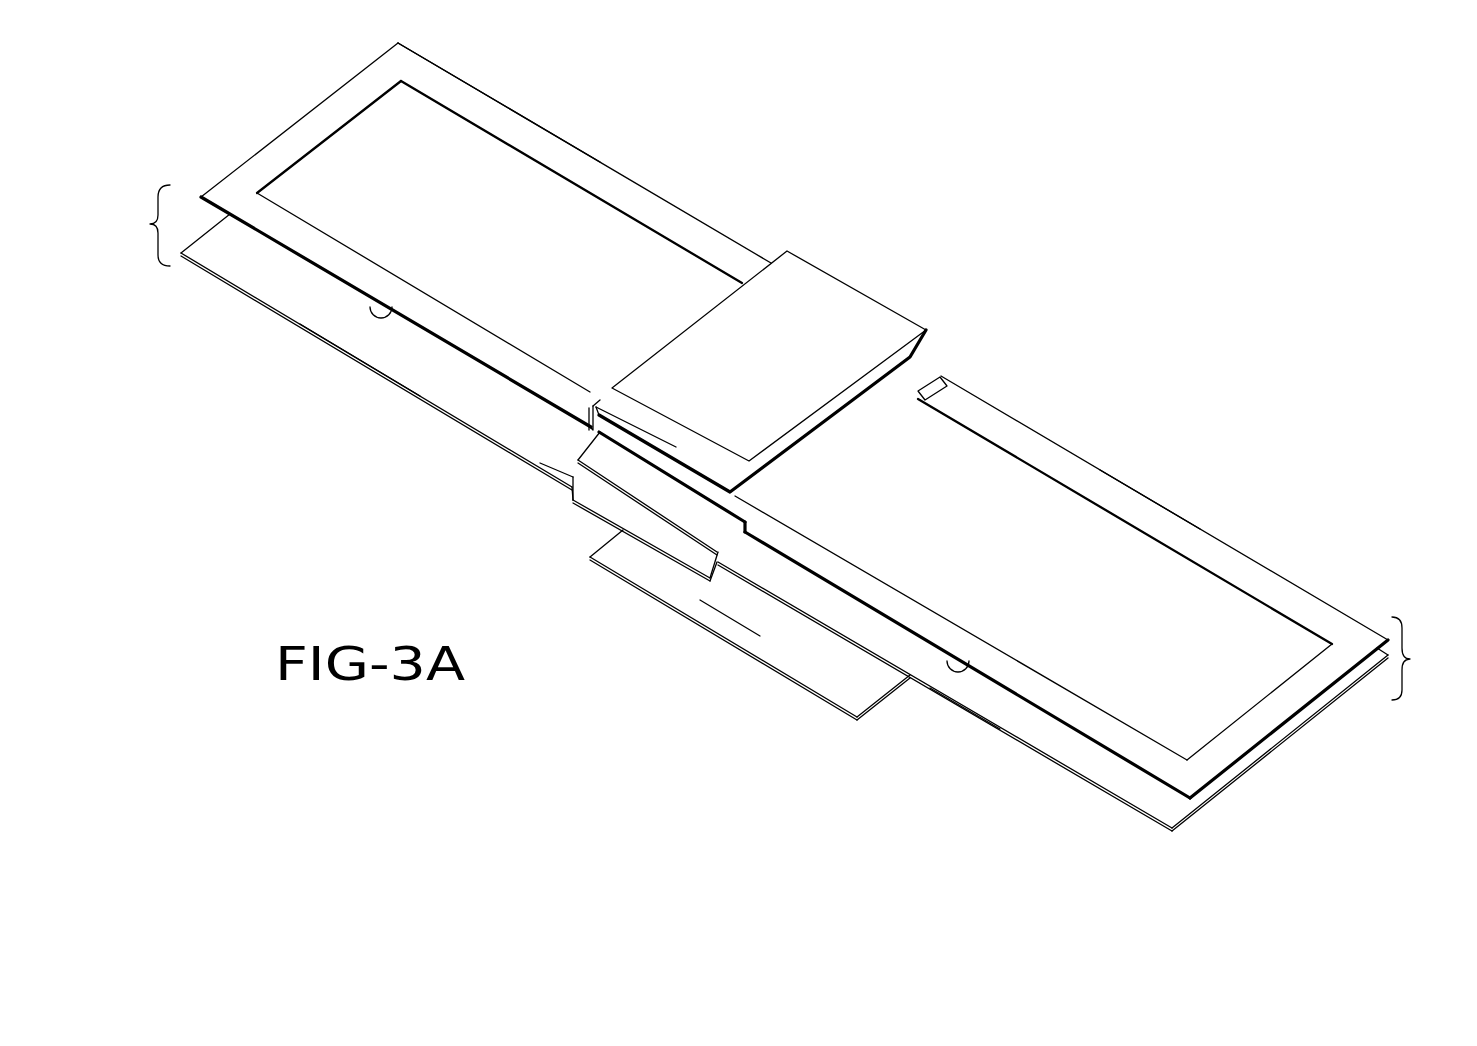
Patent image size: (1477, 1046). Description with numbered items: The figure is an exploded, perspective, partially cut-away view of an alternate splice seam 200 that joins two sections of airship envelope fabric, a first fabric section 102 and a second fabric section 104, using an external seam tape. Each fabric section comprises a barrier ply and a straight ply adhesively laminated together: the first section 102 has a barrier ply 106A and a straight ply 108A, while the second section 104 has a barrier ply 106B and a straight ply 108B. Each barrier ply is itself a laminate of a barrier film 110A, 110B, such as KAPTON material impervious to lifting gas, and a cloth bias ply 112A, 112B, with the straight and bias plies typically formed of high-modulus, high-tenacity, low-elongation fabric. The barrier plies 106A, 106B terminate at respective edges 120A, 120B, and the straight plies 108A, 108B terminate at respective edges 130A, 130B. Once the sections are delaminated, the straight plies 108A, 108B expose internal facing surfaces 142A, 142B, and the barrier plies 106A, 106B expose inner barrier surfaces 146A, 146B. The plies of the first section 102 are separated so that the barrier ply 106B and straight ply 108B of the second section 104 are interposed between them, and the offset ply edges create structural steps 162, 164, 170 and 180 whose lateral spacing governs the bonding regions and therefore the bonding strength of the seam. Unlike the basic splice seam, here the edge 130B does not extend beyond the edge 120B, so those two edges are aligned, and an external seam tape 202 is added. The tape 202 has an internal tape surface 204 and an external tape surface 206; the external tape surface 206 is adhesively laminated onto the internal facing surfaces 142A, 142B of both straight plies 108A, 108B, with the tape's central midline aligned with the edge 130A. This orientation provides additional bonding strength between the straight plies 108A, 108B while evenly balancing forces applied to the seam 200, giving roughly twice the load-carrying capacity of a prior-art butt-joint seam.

The splice seam 200 is at (1146, 233).
The fabric section 102 is at (133, 225).
The fabric section 104 is at (1425, 658).
The barrier ply 106A is at (322, 95).
The barrier ply 106B is at (1236, 547).
The straight ply 108A is at (249, 296).
The straight ply 108B is at (1068, 766).
The barrier film 110A is at (449, 191).
The barrier film 110B is at (1215, 655).
The cloth bias ply 112A is at (527, 133).
The cloth bias ply 112B is at (1133, 507).
The edge 120A is at (915, 340).
The edge 120B is at (597, 405).
The edge 130A is at (717, 578).
The edge 130B is at (578, 458).
The internal facing surface 142A is at (326, 345).
The internal facing surface 142B is at (952, 698).
The inner barrier surface 146A is at (392, 316).
The inner barrier surface 146B is at (962, 652).
The step 162 is at (573, 490).
The step 164 is at (733, 542).
The step 170 is at (940, 378).
The step 180 is at (588, 410).
The external seam tape 202 is at (738, 648).
The internal tape surface 204 is at (817, 700).
The external tape surface 206 is at (797, 641).